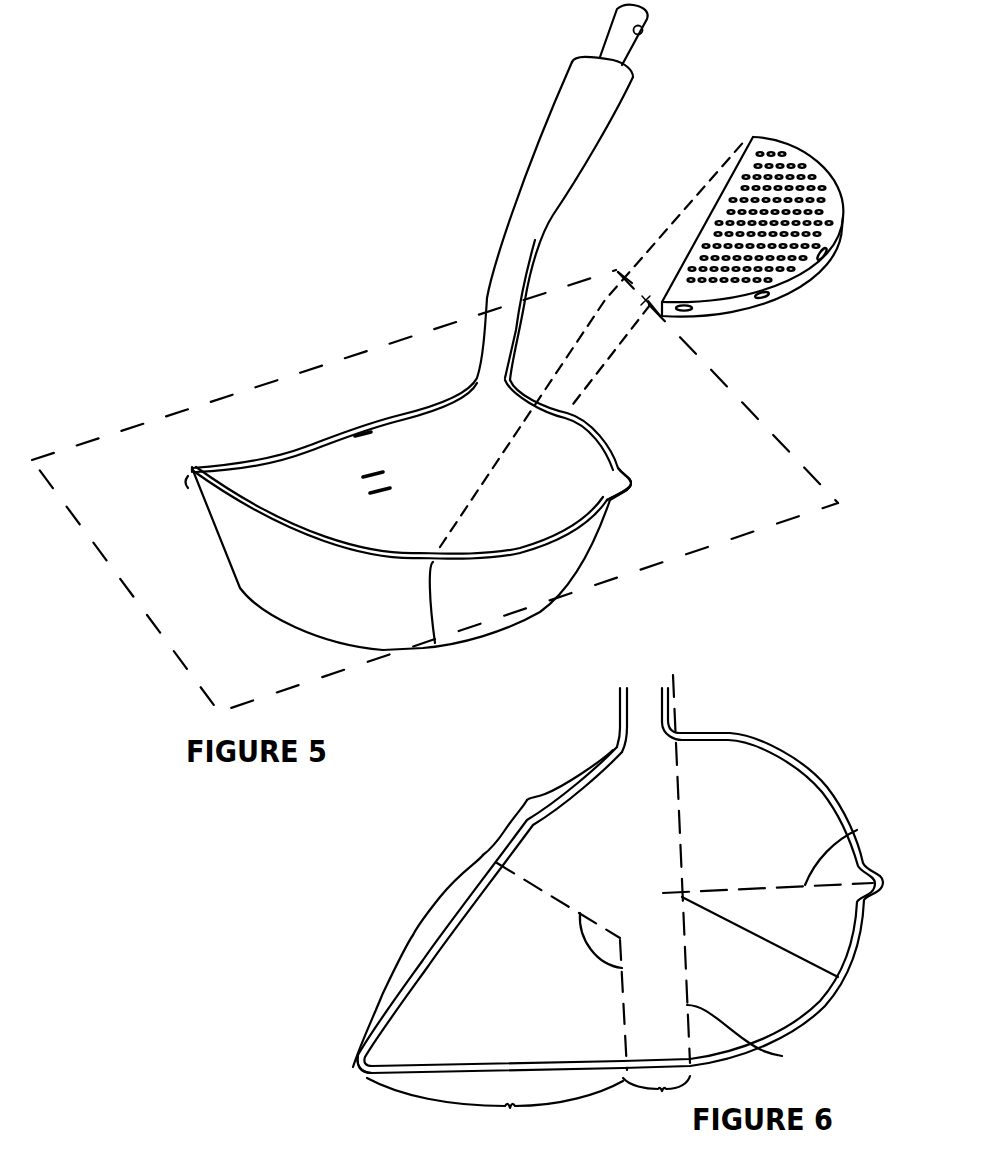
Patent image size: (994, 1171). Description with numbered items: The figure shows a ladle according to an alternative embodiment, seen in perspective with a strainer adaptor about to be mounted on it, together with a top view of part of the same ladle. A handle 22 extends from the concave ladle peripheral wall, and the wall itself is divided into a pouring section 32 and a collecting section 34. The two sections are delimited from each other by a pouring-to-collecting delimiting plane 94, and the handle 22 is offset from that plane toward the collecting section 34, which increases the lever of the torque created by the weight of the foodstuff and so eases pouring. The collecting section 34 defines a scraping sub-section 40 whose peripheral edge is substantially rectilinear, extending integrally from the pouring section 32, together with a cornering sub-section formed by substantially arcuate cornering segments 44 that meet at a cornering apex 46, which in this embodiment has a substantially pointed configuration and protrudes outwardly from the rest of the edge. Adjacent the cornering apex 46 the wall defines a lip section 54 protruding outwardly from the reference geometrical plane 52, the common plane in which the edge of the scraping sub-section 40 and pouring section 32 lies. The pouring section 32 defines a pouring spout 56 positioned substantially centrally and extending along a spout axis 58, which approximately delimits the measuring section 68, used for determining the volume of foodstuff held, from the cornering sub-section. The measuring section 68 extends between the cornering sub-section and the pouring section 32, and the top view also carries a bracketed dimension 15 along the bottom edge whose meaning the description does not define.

In FIG. 5, the handle 22 is at (570, 120).
In FIG. 6, the handle 22 is at (643, 718).
In FIG. 5, the pouring section 32 is at (600, 416).
In FIG. 6, the pouring section 32 is at (843, 773).
In FIG. 5, the collecting section 34 is at (273, 580).
In FIG. 5, the scraping sub-section 40 is at (387, 603).
In FIG. 5, the cornering apex 46 is at (191, 466).
In FIG. 6, the cornering apex 46 is at (357, 1060).
In FIG. 5, the lip section 54 is at (188, 487).
In FIG. 5, the pouring spout 56 is at (630, 485).
In FIG. 5, the reference geometrical plane 52 is at (775, 437).
In FIG. 6, the spout axis 58 is at (853, 832).
In FIG. 6, the measuring section 68 is at (560, 776).
In FIG. 6, the cornering segments 44 is at (488, 965).
In FIG. 6, the bottom segment 15 is at (656, 1092).
In FIG. 6, the pouring-to-collecting delimiting plane 94 is at (765, 1052).